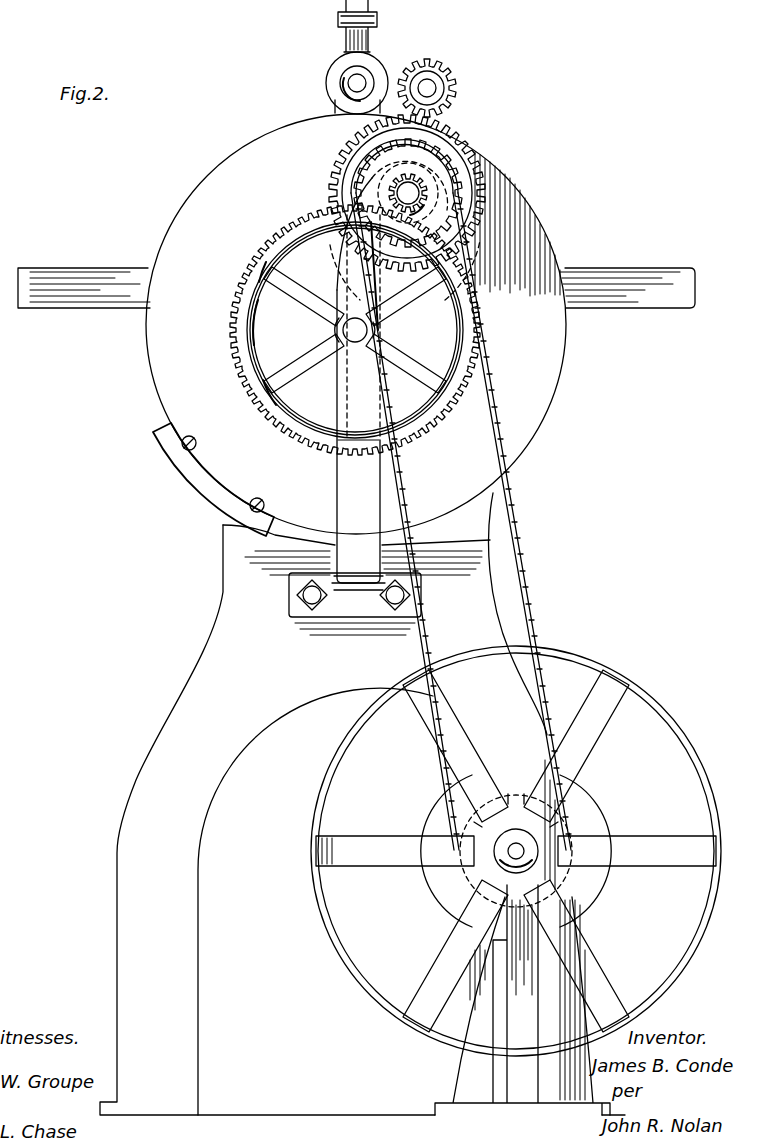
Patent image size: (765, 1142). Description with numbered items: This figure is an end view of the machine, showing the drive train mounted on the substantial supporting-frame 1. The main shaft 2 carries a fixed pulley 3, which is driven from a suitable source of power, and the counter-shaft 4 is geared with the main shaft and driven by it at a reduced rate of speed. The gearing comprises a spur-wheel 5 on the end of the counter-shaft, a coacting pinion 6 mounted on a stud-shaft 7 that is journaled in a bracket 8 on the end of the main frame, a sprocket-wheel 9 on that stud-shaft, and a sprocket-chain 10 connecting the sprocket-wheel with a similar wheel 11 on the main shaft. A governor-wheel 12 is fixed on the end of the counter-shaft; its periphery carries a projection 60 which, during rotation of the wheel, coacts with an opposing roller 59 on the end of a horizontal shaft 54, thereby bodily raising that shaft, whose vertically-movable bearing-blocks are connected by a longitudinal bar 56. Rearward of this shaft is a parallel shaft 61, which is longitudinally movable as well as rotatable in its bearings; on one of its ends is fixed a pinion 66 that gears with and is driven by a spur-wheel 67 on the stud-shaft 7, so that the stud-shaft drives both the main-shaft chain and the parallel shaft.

The supporting-frame 1 is at (190, 688).
The main shaft 2 is at (518, 848).
The fixed pulley 3 is at (324, 786).
The counter-shaft 4 is at (344, 330).
The spur-wheel 5 is at (238, 296).
The pinion 6 is at (440, 185).
The stud-shaft 7 is at (408, 194).
The bracket 8 is at (368, 389).
The sprocket-wheel 9 is at (408, 193).
The sprocket-chain 10 is at (530, 574).
The sprocket-wheel on main shaft 11 is at (510, 792).
The governor-wheel 12 is at (540, 382).
The horizontal shaft 54 is at (355, 83).
The longitudinal bar 56 is at (378, 20).
The roller 59 is at (340, 68).
The projection 60 is at (180, 455).
The parallel shaft 61 is at (430, 86).
The pinion 66 is at (458, 90).
The spur-wheel 67 is at (452, 152).